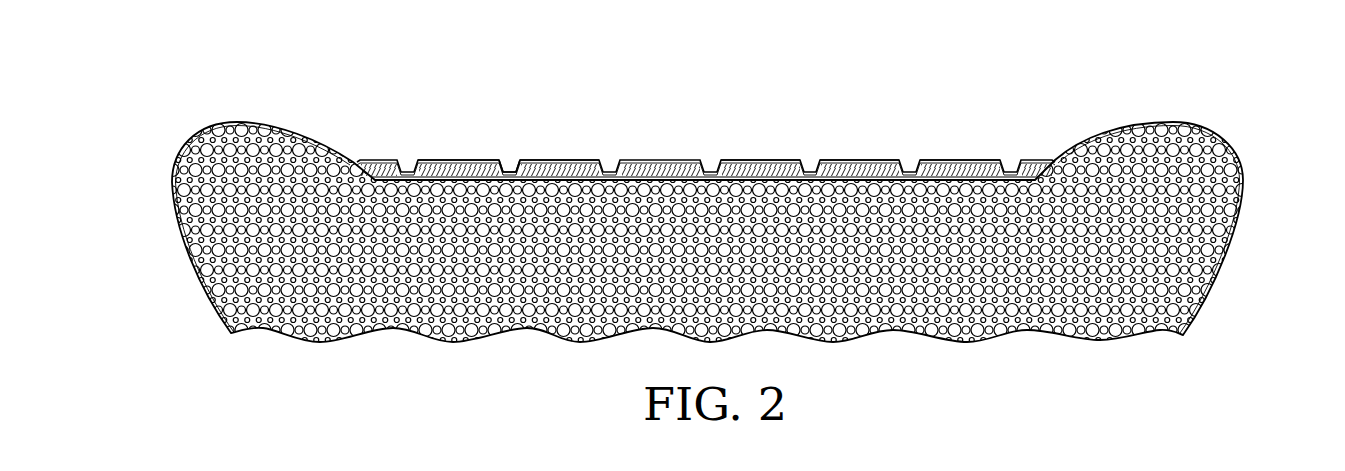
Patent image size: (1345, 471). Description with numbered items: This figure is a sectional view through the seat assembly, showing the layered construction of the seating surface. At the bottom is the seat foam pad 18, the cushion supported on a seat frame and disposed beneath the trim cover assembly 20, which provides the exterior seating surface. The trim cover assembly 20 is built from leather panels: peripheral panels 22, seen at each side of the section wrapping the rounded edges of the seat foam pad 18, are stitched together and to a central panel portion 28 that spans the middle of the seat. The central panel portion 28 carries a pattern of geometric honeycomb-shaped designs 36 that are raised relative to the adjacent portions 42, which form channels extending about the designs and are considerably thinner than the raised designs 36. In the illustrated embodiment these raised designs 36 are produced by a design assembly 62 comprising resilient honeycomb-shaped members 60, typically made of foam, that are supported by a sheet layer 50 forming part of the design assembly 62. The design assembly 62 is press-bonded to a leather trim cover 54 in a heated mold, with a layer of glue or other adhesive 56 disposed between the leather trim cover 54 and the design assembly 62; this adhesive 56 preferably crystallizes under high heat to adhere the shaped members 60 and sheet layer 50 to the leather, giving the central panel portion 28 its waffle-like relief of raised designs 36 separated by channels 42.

The seat foam pad 18 is at (228, 272).
The trim cover assembly 20 is at (242, 100).
The peripheral panels 22 is at (177, 165).
The central panel portion 28 is at (655, 148).
The honeycomb-shaped designs 36 is at (442, 148).
The adjacent portions 42 is at (506, 148).
The adhesive 56 is at (560, 167).
The honeycomb-shaped members 60 is at (760, 168).
The leather trim cover 54 is at (847, 167).
The sheet layer 50 is at (932, 180).
The design assembly 62 is at (964, 158).